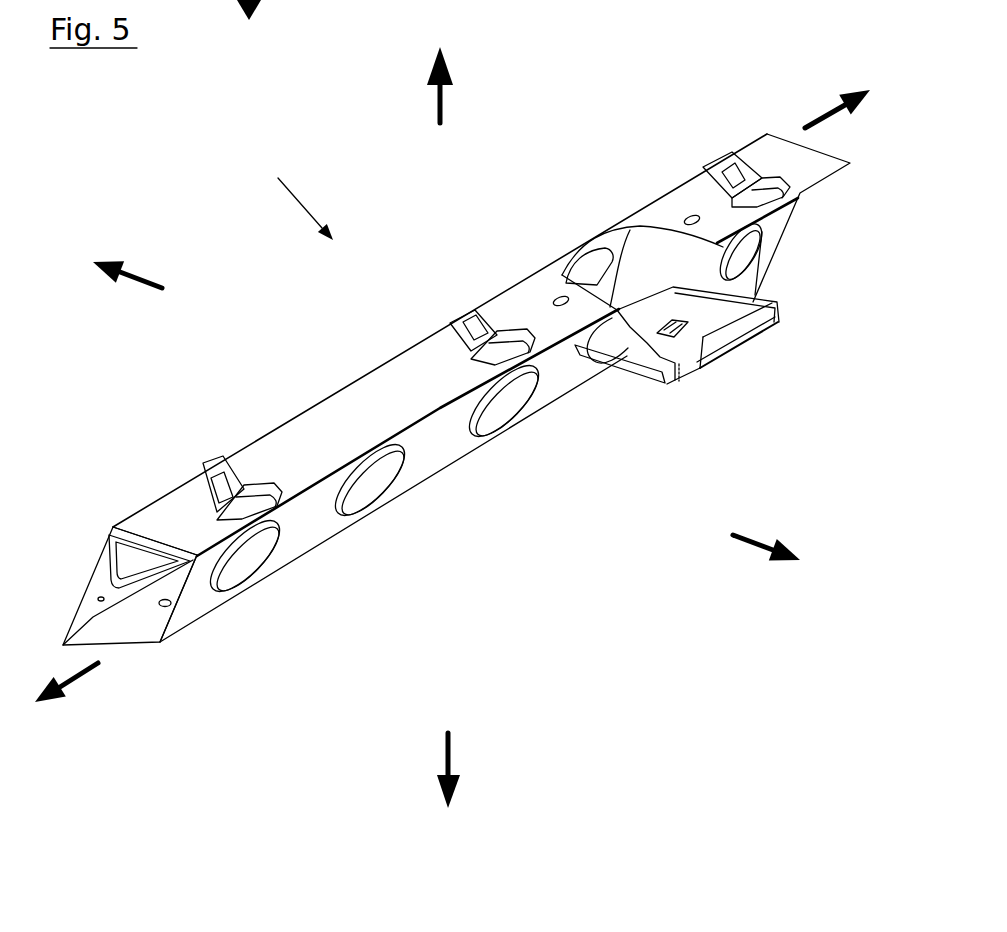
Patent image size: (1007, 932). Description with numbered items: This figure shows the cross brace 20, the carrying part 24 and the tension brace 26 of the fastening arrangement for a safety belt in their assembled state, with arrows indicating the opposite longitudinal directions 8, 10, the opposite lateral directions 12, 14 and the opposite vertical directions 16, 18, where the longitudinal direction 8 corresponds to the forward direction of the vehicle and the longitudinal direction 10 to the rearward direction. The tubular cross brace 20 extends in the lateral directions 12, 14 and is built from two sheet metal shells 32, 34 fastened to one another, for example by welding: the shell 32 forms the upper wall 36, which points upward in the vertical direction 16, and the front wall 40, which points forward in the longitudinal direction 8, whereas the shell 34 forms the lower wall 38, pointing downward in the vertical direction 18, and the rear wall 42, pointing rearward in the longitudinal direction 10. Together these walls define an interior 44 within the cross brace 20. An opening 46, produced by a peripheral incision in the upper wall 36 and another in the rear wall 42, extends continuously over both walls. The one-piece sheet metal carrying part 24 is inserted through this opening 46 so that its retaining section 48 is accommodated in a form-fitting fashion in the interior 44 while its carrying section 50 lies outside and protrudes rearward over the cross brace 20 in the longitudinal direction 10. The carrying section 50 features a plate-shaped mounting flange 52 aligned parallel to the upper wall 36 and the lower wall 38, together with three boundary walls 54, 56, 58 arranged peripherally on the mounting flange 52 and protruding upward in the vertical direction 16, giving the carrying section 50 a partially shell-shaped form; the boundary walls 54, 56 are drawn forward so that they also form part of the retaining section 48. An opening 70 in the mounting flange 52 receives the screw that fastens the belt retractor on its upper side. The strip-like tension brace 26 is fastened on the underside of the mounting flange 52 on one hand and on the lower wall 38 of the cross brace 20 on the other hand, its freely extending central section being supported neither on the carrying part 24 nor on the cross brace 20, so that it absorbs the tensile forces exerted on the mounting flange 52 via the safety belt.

The longitudinal direction 8 is at (138, 272).
The longitudinal direction 10 is at (750, 527).
The lateral direction 12 is at (822, 115).
The lateral direction 14 is at (85, 680).
The vertical direction 16 is at (436, 100).
The vertical direction 18 is at (444, 754).
The cross brace 20 is at (289, 197).
The carrying part 24 is at (663, 290).
The tension brace 26 is at (613, 378).
The shell 32 is at (132, 499).
The shell 34 is at (205, 630).
The upper wall 36 is at (175, 512).
The lower wall 38 is at (122, 622).
The front wall 40 is at (100, 551).
The rear wall 42 is at (197, 593).
The interior 44 is at (122, 622).
The opening 46 is at (617, 218).
The retaining section 48 is at (638, 245).
The carrying section 50 is at (686, 399).
The mounting flange 52 is at (647, 304).
The boundary wall 54 is at (756, 299).
The boundary wall 56 is at (652, 366).
The boundary wall 58 is at (780, 318).
The opening 70 is at (710, 337).